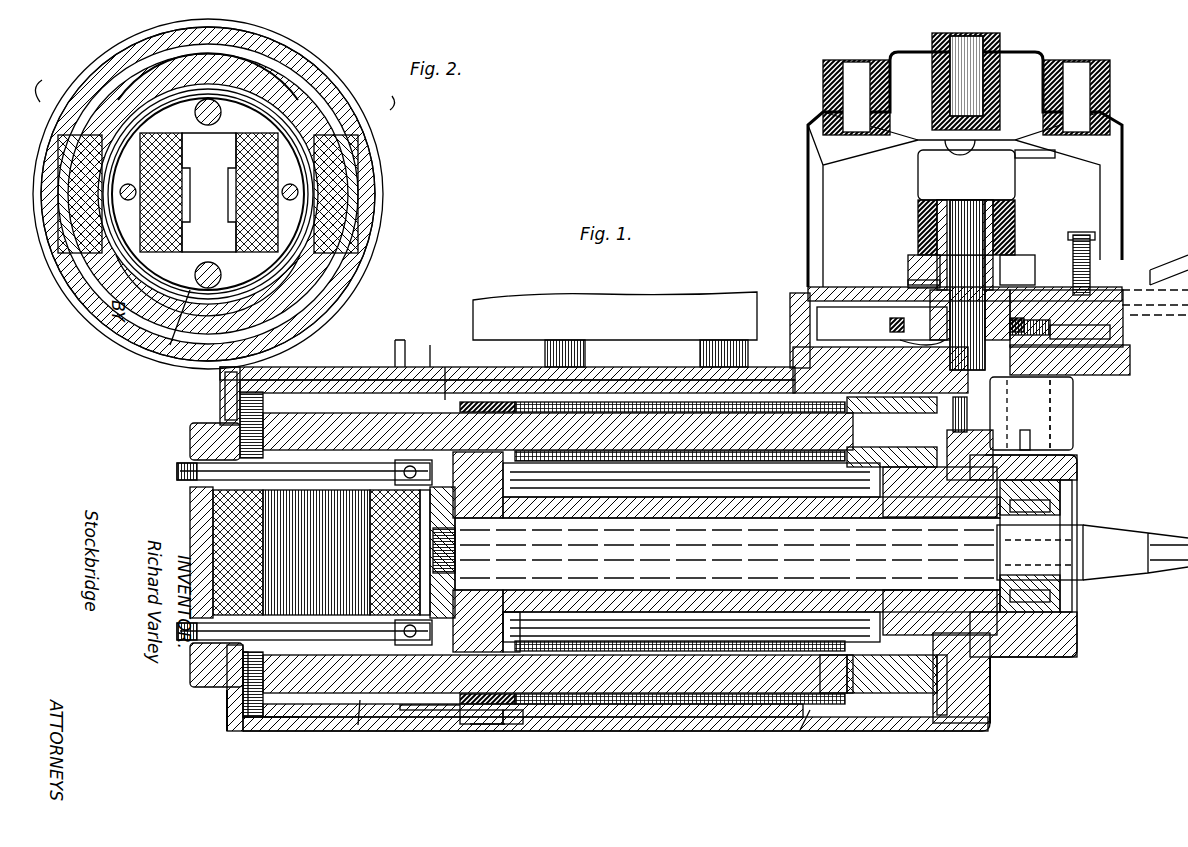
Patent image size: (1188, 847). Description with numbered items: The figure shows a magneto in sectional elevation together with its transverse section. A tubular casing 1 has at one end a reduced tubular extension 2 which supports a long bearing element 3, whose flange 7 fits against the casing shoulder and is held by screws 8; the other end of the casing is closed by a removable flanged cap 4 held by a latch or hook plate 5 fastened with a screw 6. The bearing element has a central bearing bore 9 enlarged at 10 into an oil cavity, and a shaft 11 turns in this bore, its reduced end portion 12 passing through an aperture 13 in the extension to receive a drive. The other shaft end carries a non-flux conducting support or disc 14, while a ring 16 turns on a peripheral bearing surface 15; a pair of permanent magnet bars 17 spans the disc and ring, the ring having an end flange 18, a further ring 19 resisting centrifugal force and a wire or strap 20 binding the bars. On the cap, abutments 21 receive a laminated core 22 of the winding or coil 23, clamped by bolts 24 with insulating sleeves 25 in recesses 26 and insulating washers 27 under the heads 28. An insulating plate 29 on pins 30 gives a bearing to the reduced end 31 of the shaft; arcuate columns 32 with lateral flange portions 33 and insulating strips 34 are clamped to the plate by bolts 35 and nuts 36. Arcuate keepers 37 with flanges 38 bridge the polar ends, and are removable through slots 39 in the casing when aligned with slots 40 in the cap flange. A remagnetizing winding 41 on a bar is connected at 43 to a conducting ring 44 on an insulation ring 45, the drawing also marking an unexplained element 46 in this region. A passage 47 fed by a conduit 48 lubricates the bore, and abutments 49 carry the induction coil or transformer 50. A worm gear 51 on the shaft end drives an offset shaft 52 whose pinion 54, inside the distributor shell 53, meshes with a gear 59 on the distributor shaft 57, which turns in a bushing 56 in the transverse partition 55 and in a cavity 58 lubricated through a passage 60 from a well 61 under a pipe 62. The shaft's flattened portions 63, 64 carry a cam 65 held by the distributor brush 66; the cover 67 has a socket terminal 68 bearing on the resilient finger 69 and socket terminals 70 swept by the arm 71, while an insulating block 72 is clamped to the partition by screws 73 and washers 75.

In FIG. 2, the tubular casing 1 is at (105, 60).
In FIG. 1, the tubular casing 1 is at (752, 728).
In FIG. 1, the reduced tubular extension 2 is at (1035, 650).
In FIG. 1, the bearing element 3 is at (575, 605).
In FIG. 1, the removable flanged cap 4 is at (226, 720).
In FIG. 1, the latch or hook plate 5 is at (228, 385).
In FIG. 1, the screw 6 is at (405, 345).
In FIG. 1, the flange 7 is at (992, 712).
In FIG. 1, the screws 8 is at (990, 410).
In FIG. 1, the central bearing bore 9 is at (935, 520).
In FIG. 1, the enlarged portion 10 is at (700, 522).
In FIG. 1, the shaft 11 is at (818, 595).
In FIG. 1, the reduced end portion 12 is at (1070, 540).
In FIG. 1, the aperture 13 is at (1075, 590).
In FIG. 1, the support or disc 14 is at (490, 515).
In FIG. 1, the peripheral bearing surface 15 is at (875, 486).
In FIG. 1, the ring 16 is at (905, 700).
In FIG. 2, the permanent magnet bars 17 is at (145, 72).
In FIG. 1, the permanent magnet bars 17 is at (665, 405).
In FIG. 1, the end flange 18 is at (945, 715).
In FIG. 1, the ring 19 is at (860, 700).
In FIG. 1, the wire or strap 20 is at (375, 720).
In FIG. 1, the abutments 21 is at (200, 475).
In FIG. 2, the laminated core 22 is at (192, 300).
In FIG. 1, the laminated core 22 is at (215, 522).
In FIG. 2, the winding or coil 23 is at (300, 90).
In FIG. 1, the winding or coil 23 is at (230, 580).
In FIG. 2, the bolts 24 is at (190, 150).
In FIG. 1, the bolts 24 is at (190, 435).
In FIG. 1, the insulating sleeves 25 is at (248, 725).
In FIG. 1, the recesses 26 is at (240, 690).
In FIG. 2, the insulating washers 27 is at (205, 262).
In FIG. 1, the insulating washers 27 is at (355, 735).
In FIG. 1, the heads 28 is at (432, 360).
In FIG. 1, the insulating plate 29 is at (520, 625).
In FIG. 1, the pins 30 is at (448, 395).
In FIG. 1, the reduced end 31 is at (455, 545).
In FIG. 2, the arcuate columns 32 is at (300, 210).
In FIG. 2, the lateral flange portions 33 is at (290, 268).
In FIG. 2, the strips of insulation 34 is at (208, 125).
In FIG. 2, the bolts 35 is at (305, 175).
In FIG. 1, the bolts 35 is at (240, 560).
In FIG. 1, the nuts 36 is at (240, 540).
In FIG. 2, the arcuate keepers 37 is at (360, 190).
In FIG. 2, the flanges 38 is at (312, 240).
In FIG. 2, the slots 39 is at (220, 194).
In FIG. 2, the slots 40 is at (280, 42).
In FIG. 1, the coil or winding 41 is at (555, 395).
In FIG. 1, the connection 43 is at (520, 720).
In FIG. 1, the metallic conducting ring 44 is at (465, 725).
In FIG. 1, the ring of insulation 45 is at (440, 712).
In FIG. 1, the seam 46 is at (492, 728).
In FIG. 1, the passage 47 is at (1065, 470).
In FIG. 1, the conduit 48 is at (1030, 440).
In FIG. 1, the abutments 49 is at (588, 352).
In FIG. 1, the induction coil or transformer 50 is at (695, 300).
In FIG. 1, the worm gear 51 is at (1060, 600).
In FIG. 1, the shaft 52 is at (1052, 418).
In FIG. 1, the distributor shell 53 is at (1150, 270).
In FIG. 1, the pinion 54 is at (1150, 290).
In FIG. 1, the transverse partition 55 is at (840, 300).
In FIG. 1, the bearing bushing 56 is at (900, 310).
In FIG. 1, the distributor shaft 57 is at (918, 212).
In FIG. 1, the cavity 58 is at (900, 342).
In FIG. 1, the gear 59 is at (885, 328).
In FIG. 1, the passage 60 is at (1000, 375).
In FIG. 1, the shallow well 61 is at (1065, 350).
In FIG. 1, the pipe 62 is at (1105, 340).
In FIG. 1, the flattened portion 63 is at (908, 262).
In FIG. 1, the flattened portion 64 is at (1020, 262).
In FIG. 1, the cam 65 is at (908, 282).
In FIG. 1, the distributor brush 66 is at (918, 168).
In FIG. 1, the cover 67 is at (1122, 175).
In FIG. 1, the socket terminal 68 is at (965, 55).
In FIG. 1, the resilient finger 69 is at (978, 150).
In FIG. 1, the socket terminals 70 is at (1078, 80).
In FIG. 1, the arm 71 is at (1030, 158).
In FIG. 1, the insulating block 72 is at (822, 720).
In FIG. 1, the screws 73 is at (1082, 232).
In FIG. 1, the washers 75 is at (1073, 262).